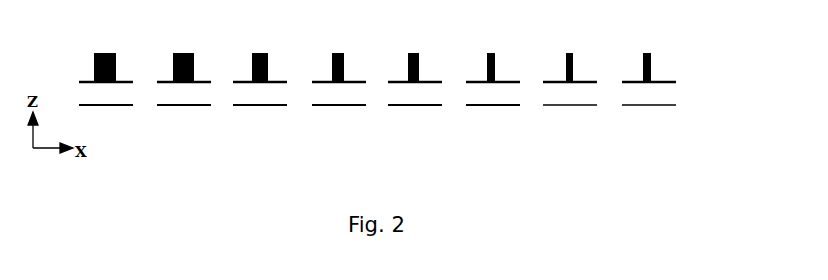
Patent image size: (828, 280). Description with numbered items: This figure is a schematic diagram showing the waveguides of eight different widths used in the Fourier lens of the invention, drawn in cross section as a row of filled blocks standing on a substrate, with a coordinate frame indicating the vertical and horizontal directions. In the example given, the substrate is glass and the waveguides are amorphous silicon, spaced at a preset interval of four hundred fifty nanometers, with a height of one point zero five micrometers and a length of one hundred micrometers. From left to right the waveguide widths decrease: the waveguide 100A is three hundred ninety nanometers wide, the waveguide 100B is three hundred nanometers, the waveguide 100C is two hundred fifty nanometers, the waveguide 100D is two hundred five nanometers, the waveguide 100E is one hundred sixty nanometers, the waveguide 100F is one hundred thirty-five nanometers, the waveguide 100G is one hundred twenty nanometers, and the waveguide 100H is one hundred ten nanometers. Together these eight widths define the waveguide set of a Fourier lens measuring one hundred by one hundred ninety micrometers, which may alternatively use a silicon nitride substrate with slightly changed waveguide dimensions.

The waveguide of first width 100A is at (116, 62).
The waveguide of second width 100B is at (194, 62).
The waveguide of third width 100C is at (268, 62).
The waveguide of fourth width 100D is at (344, 62).
The waveguide of fifth width 100E is at (419, 62).
The waveguide of sixth width 100F is at (495, 62).
The waveguide of seventh width 100G is at (573, 62).
The waveguide of eighth width 100H is at (651, 62).